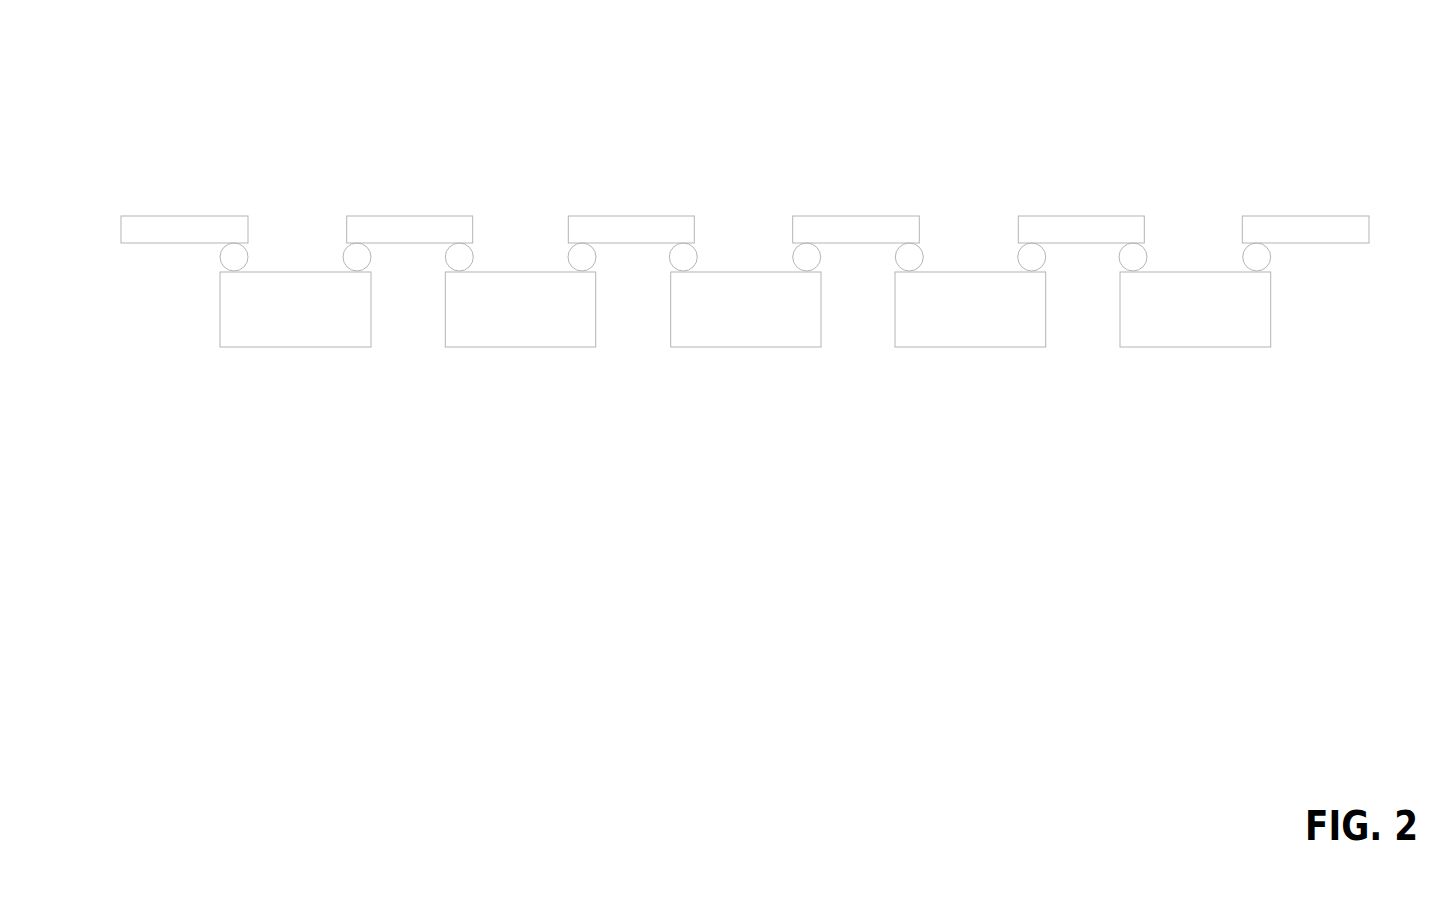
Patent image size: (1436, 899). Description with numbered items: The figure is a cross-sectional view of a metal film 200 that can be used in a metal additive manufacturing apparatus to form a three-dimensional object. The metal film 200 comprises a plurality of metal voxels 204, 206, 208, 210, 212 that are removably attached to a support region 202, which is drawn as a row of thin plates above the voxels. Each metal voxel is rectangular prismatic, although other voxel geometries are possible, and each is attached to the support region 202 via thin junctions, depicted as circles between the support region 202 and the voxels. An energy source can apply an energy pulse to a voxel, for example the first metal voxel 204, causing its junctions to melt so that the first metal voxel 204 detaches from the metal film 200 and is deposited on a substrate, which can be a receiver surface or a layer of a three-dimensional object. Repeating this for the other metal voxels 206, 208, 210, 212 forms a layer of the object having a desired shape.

The metal film 200 is at (1194, 49).
The support region 202 is at (169, 216).
The first metal voxel 204 is at (257, 347).
The metal voxel 206 is at (483, 347).
The metal voxel 208 is at (727, 347).
The metal voxel 210 is at (950, 347).
The metal voxel 212 is at (1157, 347).